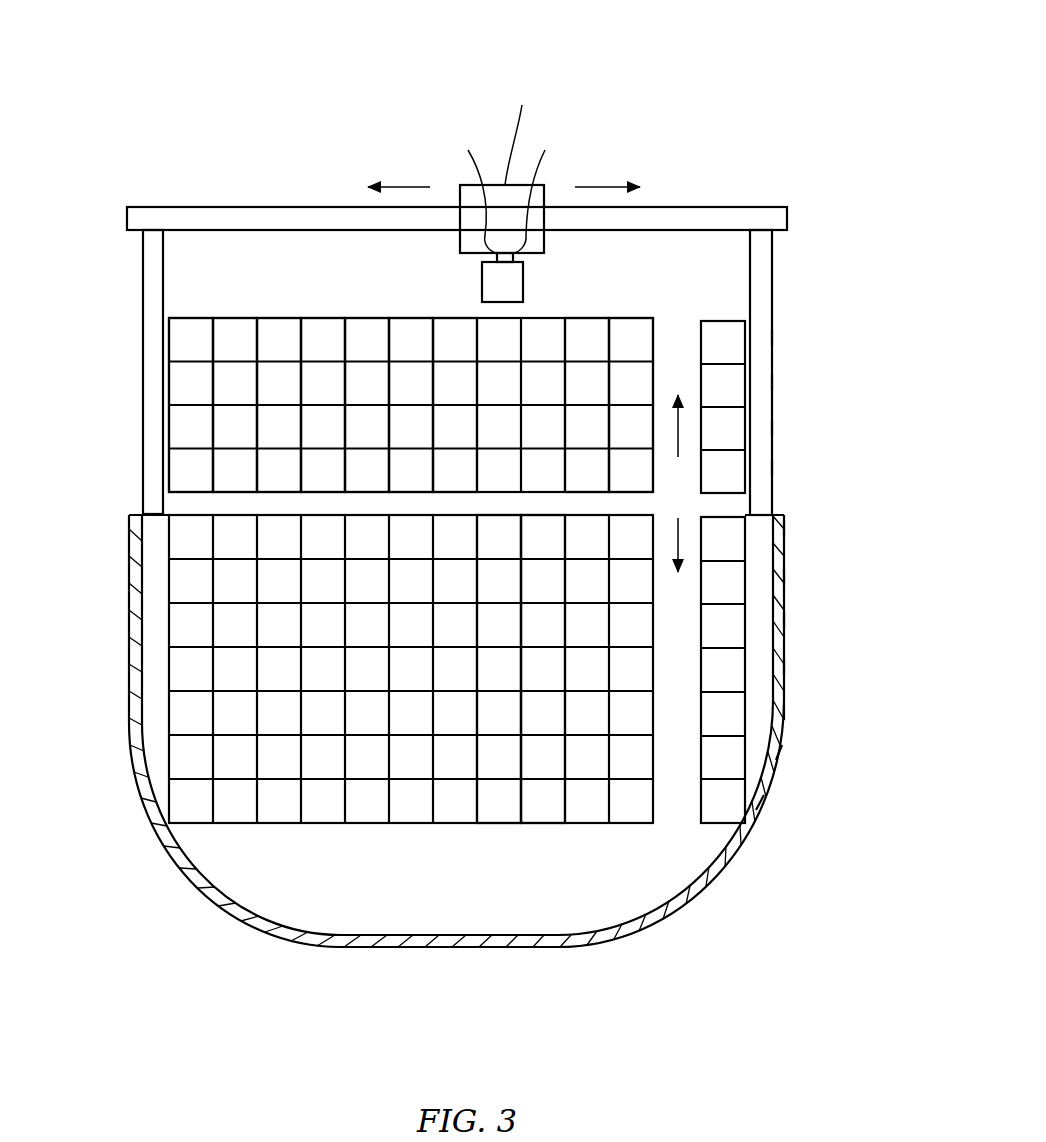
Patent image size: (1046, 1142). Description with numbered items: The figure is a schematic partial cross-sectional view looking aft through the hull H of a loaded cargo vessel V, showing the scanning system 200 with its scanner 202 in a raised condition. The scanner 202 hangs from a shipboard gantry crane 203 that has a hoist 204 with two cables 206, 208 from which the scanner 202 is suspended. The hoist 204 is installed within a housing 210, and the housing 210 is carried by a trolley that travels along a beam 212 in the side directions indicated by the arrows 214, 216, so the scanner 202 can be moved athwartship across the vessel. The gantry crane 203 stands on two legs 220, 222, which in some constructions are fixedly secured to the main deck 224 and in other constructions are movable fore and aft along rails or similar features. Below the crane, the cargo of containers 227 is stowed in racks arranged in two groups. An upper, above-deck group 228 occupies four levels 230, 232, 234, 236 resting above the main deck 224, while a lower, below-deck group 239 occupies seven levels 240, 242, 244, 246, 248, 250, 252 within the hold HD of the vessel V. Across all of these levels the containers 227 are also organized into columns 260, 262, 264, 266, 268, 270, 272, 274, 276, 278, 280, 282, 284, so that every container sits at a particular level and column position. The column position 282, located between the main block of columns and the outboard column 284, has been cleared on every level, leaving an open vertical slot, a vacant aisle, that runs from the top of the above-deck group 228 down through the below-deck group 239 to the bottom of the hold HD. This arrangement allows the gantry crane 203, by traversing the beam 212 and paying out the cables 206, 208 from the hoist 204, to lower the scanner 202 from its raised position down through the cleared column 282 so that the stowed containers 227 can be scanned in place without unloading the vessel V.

The scanning system 200 is at (282, 120).
The scanner 202 is at (528, 283).
The shipboard gantry crane 203 is at (690, 77).
The hoist 204 is at (490, 103).
The cable 206 is at (543, 189).
The cable 208 is at (467, 189).
The housing 210 is at (525, 132).
The beam 212 is at (223, 207).
The arrow 214 is at (400, 187).
The arrow 216 is at (603, 187).
The leg 220 is at (143, 257).
The leg 222 is at (774, 242).
The main deck 224 is at (200, 507).
The containers 227 is at (180, 266).
The upper, above-deck group 228 is at (132, 318).
The level 230 is at (777, 338).
The level 232 is at (777, 382).
The level 234 is at (777, 428).
The level 236 is at (777, 467).
The lower, below-deck group 239 is at (130, 515).
The level 240 is at (791, 529).
The level 242 is at (791, 578).
The level 244 is at (789, 620).
The level 246 is at (789, 667).
The level 248 is at (789, 713).
The level 250 is at (796, 755).
The level 252 is at (775, 805).
The column 260 is at (190, 311).
The column 262 is at (236, 311).
The column 264 is at (286, 311).
The column 266 is at (316, 311).
The column 268 is at (371, 311).
The column 270 is at (401, 311).
The column 272 is at (452, 311).
The column 274 is at (503, 830).
The column 276 is at (551, 830).
The column 278 is at (585, 311).
The column 280 is at (642, 311).
The column position 282 is at (685, 316).
The column 284 is at (728, 313).
The hold HD is at (358, 880).
The hull H is at (165, 831).
The cargo vessel V is at (187, 877).